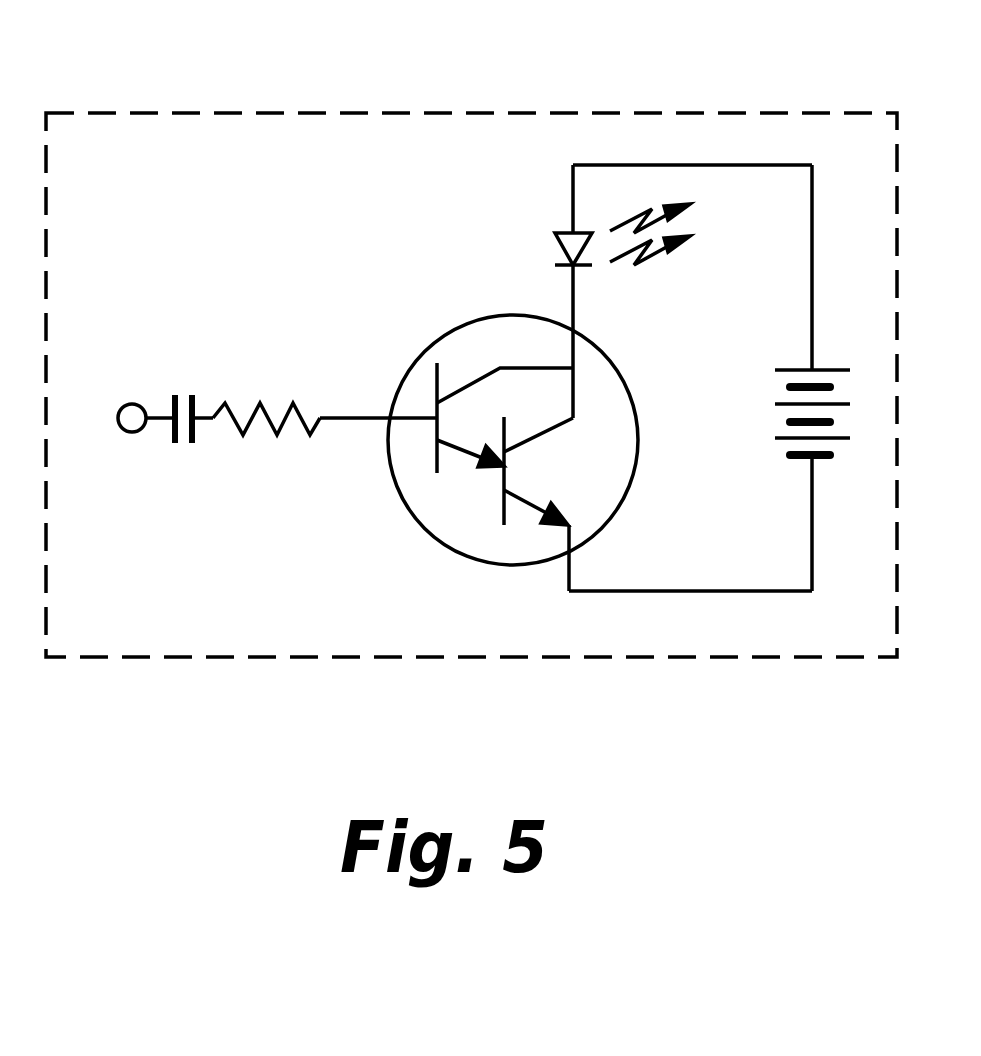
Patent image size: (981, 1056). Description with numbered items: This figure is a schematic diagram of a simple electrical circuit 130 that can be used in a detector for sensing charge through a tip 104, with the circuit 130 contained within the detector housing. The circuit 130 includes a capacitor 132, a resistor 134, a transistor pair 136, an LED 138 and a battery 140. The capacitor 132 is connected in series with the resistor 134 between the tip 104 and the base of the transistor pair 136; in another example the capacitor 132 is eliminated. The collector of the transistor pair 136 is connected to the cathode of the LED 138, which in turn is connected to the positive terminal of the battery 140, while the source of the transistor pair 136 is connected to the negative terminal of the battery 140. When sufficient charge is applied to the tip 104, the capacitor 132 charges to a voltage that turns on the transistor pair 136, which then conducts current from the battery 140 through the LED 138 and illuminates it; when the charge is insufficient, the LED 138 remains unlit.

The electrical circuit 130 is at (447, 110).
The tip 104 is at (128, 402).
The capacitor 132 is at (194, 444).
The resistor 134 is at (262, 402).
The transistor pair 136 is at (432, 532).
The LED 138 is at (555, 243).
The battery 140 is at (798, 367).